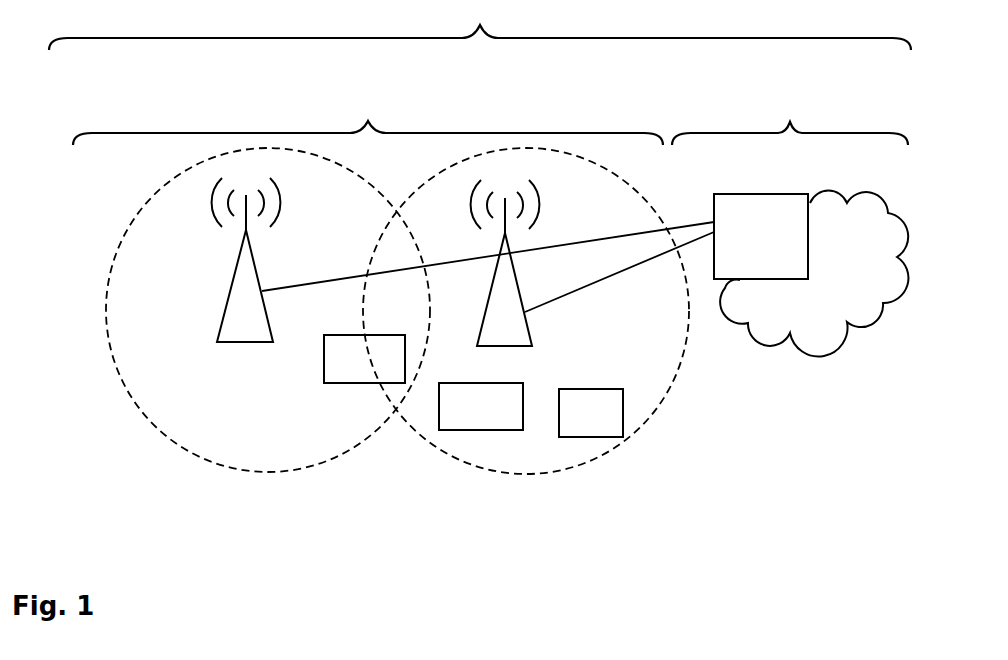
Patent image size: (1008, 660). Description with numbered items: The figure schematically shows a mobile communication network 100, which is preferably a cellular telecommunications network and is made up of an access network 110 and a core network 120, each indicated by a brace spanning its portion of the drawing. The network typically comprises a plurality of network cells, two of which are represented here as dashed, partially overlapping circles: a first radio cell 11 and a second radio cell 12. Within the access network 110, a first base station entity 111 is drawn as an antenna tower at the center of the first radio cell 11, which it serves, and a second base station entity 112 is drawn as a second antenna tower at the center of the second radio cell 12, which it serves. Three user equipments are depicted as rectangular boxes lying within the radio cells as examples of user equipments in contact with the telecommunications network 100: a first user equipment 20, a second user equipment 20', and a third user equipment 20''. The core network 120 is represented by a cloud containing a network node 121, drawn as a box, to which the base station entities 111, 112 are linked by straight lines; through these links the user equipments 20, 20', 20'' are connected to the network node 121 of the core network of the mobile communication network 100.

The mobile communication network 100 is at (480, 25).
The access network 110 is at (368, 118).
The core network 120 is at (790, 224).
The network node 121 is at (535, 253).
The first base station entity 111 is at (246, 260).
The second base station entity 112 is at (505, 263).
The first radio cell 11 is at (158, 429).
The second radio cell 12 is at (435, 445).
The first user equipment 20 is at (591, 413).
The second user equipment 20' is at (481, 406).
The third user equipment 20'' is at (364, 359).